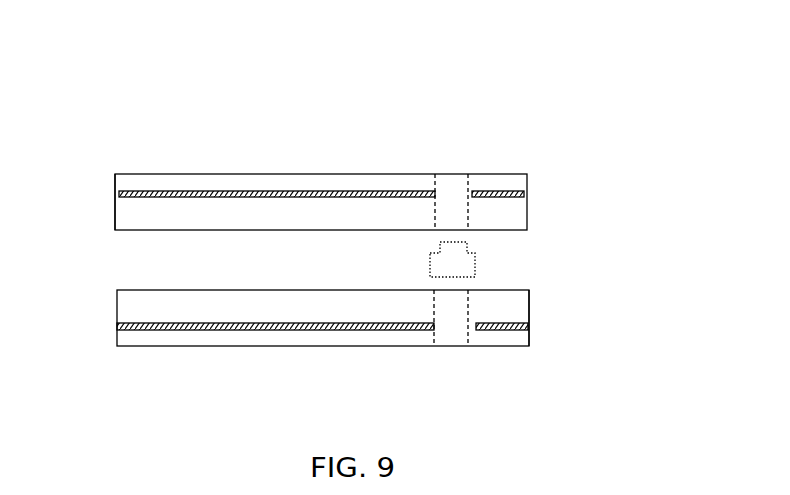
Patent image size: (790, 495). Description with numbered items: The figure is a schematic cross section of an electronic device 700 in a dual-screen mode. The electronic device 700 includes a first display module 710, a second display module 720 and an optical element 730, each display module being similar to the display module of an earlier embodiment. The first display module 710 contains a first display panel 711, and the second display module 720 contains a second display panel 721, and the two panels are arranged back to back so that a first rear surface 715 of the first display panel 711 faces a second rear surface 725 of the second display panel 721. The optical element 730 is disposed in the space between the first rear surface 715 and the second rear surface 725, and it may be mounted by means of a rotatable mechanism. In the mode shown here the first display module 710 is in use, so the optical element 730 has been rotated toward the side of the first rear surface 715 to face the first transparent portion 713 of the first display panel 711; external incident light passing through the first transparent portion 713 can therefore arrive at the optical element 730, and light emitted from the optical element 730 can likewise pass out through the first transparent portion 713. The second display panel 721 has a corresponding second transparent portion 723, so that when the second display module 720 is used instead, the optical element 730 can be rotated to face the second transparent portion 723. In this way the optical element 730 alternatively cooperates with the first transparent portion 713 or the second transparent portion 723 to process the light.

The electronic device 700 is at (362, 45).
The first display module 710 is at (124, 174).
The first display panel 711 is at (108, 235).
The first transparent portion 713 is at (453, 210).
The first rear surface 715 is at (316, 240).
The second display module 720 is at (528, 341).
The second display panel 721 is at (543, 293).
The second transparent portion 723 is at (450, 310).
The second rear surface 725 is at (365, 280).
The optical element 730 is at (458, 257).